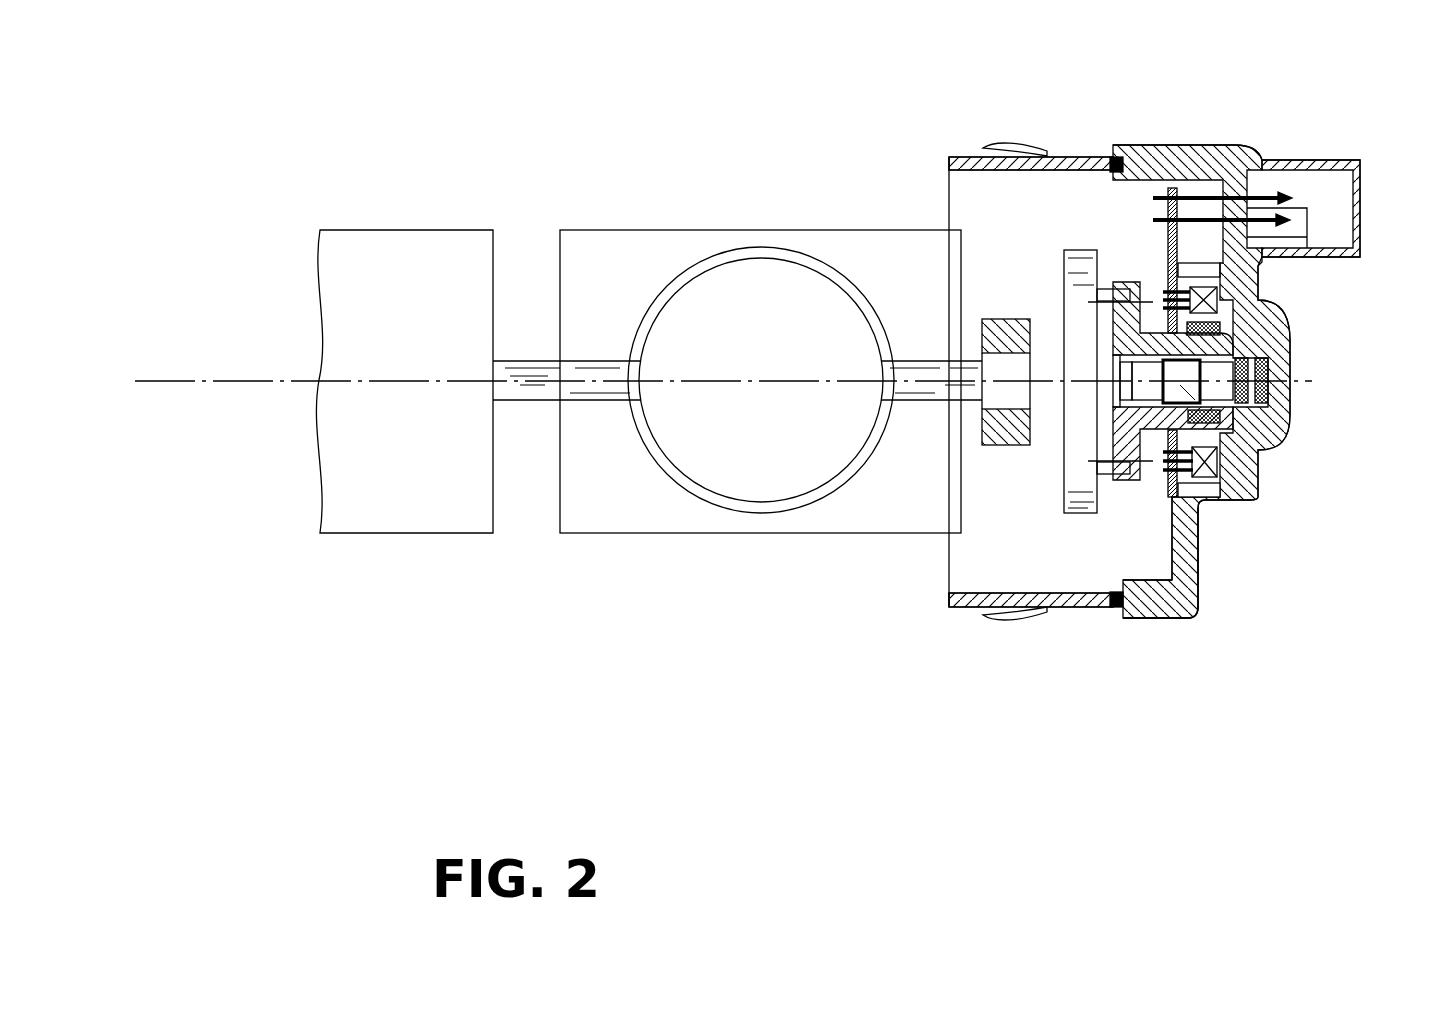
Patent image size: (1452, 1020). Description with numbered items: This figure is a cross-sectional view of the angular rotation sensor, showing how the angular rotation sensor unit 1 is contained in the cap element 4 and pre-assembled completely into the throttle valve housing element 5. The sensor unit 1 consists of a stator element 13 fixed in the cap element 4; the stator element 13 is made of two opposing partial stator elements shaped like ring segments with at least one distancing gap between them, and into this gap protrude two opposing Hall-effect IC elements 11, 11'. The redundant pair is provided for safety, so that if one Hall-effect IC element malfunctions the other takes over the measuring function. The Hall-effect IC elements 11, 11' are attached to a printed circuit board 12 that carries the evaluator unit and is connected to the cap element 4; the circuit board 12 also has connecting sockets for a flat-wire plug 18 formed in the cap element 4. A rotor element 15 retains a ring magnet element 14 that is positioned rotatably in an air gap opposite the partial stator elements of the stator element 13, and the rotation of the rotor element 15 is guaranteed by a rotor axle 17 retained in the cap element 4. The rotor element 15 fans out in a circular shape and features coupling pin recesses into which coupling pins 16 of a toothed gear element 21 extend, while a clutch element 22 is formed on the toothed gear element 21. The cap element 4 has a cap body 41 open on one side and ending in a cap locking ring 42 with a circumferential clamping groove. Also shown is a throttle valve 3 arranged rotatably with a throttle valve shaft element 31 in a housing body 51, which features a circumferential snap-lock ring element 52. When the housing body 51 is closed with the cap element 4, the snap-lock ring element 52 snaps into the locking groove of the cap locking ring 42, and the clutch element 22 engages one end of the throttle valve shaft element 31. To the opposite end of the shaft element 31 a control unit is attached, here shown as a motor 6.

The angular rotation sensor unit 1 is at (1140, 200).
The throttle valve 3 is at (745, 488).
The cap element 4 is at (1183, 593).
The throttle valve housing element 5 is at (1000, 567).
The motor 6 is at (383, 517).
The Hall-effect IC element 11 is at (1308, 486).
The Hall-effect IC element 11' is at (1308, 311).
The printed circuit board 12 is at (1180, 240).
The stator element 13 is at (1283, 348).
The ring magnet element 14 is at (1215, 435).
The rotor element 15 is at (1200, 527).
The coupling pin 16 is at (1198, 587).
The rotor axle 17 is at (1262, 420).
The flat-wire plug 18 is at (1327, 200).
The toothed gear element 21 is at (1073, 283).
The clutch element 22 is at (990, 337).
The throttle valve shaft element 31 is at (602, 363).
The cap body 41 is at (1135, 607).
The cap locking ring 42 is at (1027, 618).
The housing body 51 is at (997, 163).
The snap-lock ring element 52 is at (1050, 153).